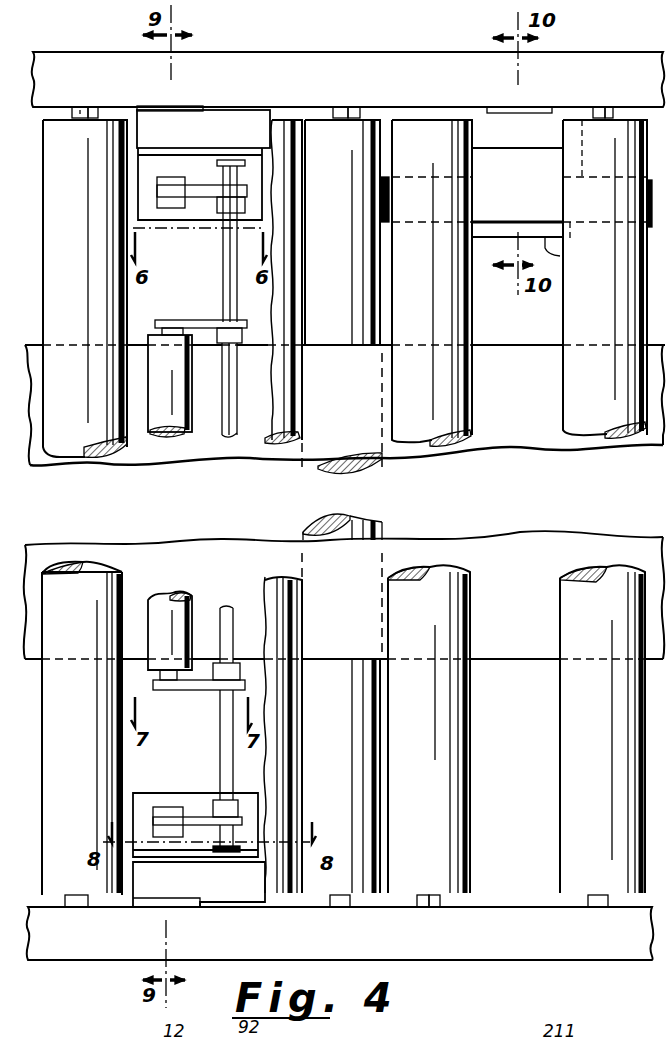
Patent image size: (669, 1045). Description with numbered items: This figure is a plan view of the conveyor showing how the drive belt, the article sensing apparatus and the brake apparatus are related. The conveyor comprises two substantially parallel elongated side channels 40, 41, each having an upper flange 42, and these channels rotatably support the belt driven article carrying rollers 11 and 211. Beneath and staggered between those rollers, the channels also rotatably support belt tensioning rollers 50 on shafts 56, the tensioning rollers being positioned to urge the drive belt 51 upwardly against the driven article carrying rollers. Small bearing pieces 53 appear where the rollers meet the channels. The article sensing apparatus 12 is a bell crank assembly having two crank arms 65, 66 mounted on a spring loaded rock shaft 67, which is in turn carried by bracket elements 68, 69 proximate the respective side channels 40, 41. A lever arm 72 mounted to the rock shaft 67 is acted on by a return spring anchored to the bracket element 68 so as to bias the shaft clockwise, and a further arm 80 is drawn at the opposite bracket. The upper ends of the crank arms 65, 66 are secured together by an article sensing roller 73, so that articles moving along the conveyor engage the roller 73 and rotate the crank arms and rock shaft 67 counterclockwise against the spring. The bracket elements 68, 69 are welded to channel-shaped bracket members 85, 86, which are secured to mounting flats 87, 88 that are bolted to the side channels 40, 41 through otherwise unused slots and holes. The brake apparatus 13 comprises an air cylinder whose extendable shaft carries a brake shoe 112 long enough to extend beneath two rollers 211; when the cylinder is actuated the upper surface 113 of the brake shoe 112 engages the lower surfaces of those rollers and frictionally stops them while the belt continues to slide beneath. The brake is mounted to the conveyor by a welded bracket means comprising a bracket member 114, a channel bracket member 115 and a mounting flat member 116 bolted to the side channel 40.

The article carrying roller 11 is at (268, 580).
The article sensing apparatus 12 is at (202, 287).
The brake apparatus 13 is at (503, 207).
The side channel 40 is at (348, 64).
The side channel 41 is at (482, 947).
The upper flange 42 is at (352, 33).
The belt tensioning roller 50 is at (320, 467).
The drive belt 51 is at (402, 453).
The bearing pin 53 is at (96, 84).
The shaft 56 is at (363, 92).
The crank arm 65 is at (163, 321).
The crank arm 66 is at (195, 692).
The rock shaft 67 is at (220, 606).
The bracket element 68 is at (252, 178).
The bracket element 69 is at (143, 802).
The lever arm 72 is at (198, 188).
The article sensing roller 73 is at (152, 600).
The arm 80 is at (192, 820).
The bracket member 85 is at (238, 123).
The bracket member 86 is at (243, 887).
The mounting flat 87 is at (176, 105).
The mounting flat 88 is at (182, 905).
The brake shoe 112 is at (535, 196).
The upper surface 113 is at (508, 191).
The bracket member 114 is at (571, 254).
The channel bracket member 115 is at (522, 135).
The mounting flat member 116 is at (552, 107).
The article carrying roller 211 is at (572, 335).